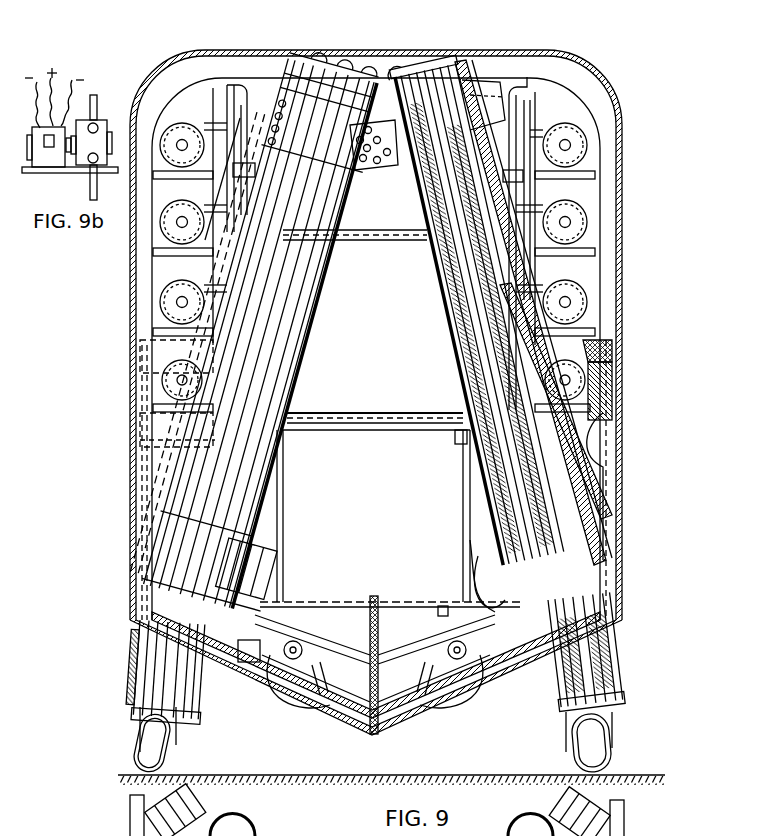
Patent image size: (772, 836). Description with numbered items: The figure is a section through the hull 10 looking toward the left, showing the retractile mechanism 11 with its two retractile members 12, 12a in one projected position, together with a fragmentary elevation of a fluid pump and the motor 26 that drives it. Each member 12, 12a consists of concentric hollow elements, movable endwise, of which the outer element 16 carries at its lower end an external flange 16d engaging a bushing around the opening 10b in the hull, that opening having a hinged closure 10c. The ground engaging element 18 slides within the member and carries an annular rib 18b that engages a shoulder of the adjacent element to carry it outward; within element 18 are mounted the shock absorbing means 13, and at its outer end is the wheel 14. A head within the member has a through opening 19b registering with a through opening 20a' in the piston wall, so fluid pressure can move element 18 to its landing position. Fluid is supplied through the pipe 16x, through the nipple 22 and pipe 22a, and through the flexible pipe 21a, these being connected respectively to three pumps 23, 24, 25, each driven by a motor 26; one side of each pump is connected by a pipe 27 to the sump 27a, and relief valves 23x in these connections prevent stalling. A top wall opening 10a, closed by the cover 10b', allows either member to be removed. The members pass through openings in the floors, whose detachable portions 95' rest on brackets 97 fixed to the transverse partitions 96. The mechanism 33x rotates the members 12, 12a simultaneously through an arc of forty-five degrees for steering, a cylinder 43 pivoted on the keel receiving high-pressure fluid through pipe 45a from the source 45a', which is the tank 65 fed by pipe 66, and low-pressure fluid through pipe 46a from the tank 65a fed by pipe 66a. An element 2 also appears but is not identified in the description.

In FIG. 9, the opening 10a is at (481, 56).
In FIG. 9, the frame column 2 is at (622, 247).
In FIG. 9, the hull 10 is at (262, 698).
In FIG. 9, the rotating mechanism 33x is at (475, 725).
In FIG. 9, the pump 24 is at (170, 138).
In FIG. 9, the pump 25 is at (168, 225).
In FIG. 9, the pump 23 is at (165, 302).
In FIG. 9, the pipe 66 is at (168, 367).
In FIG. 9, the tank 65 is at (145, 382).
In FIG. 9, the source of supply 45a' is at (114, 482).
In FIG. 9, the sump 27a is at (138, 503).
In FIG. 9, the pipe 27 is at (218, 180).
In FIG. 9, the pipe 66a is at (615, 357).
In FIG. 9, the tank 65a is at (608, 385).
In FIG. 9, the pipe 46a is at (612, 408).
In FIG. 9, the annular rib 18b is at (557, 503).
In FIG. 9, the transverse partitions 96 is at (268, 510).
In FIG. 9, the pipe 22a is at (308, 72).
In FIG. 9, the flexible pipe 21a is at (343, 66).
In FIG. 9, the relief valves 23x is at (230, 110).
In FIG. 9, the external flange 16d is at (590, 600).
In FIG. 9, the nipple 22 is at (393, 75).
In FIG. 9, the cover 10b' is at (467, 45).
In FIG. 9, the detachable floor portions 95' is at (376, 316).
In FIG. 9, the retractile member 12 is at (330, 355).
In FIG. 9, the retractile member 12a is at (441, 469).
In FIG. 9, the brackets 97 is at (287, 448).
In FIG. 9, the through opening 19b is at (455, 430).
In FIG. 9, the through opening 20a' is at (441, 456).
In FIG. 9, the retractile mechanism 11 is at (390, 588).
In FIG. 9, the pipe 45a is at (306, 562).
In FIG. 9, the cylinder 43 is at (440, 612).
In FIG. 9, the outer element 16 is at (242, 656).
In FIG. 9, the supply and discharge pipe 16x is at (478, 556).
In FIG. 9, the ground engaging element 18 is at (200, 699).
In FIG. 9, the hinged closure 10c is at (142, 642).
In FIG. 9, the opening 10b is at (220, 679).
In FIG. 9, the shock absorbing means 13 is at (545, 731).
In FIG. 9, the wheel 14 is at (170, 769).
In FIG. 9B, the motor 26 is at (48, 157).